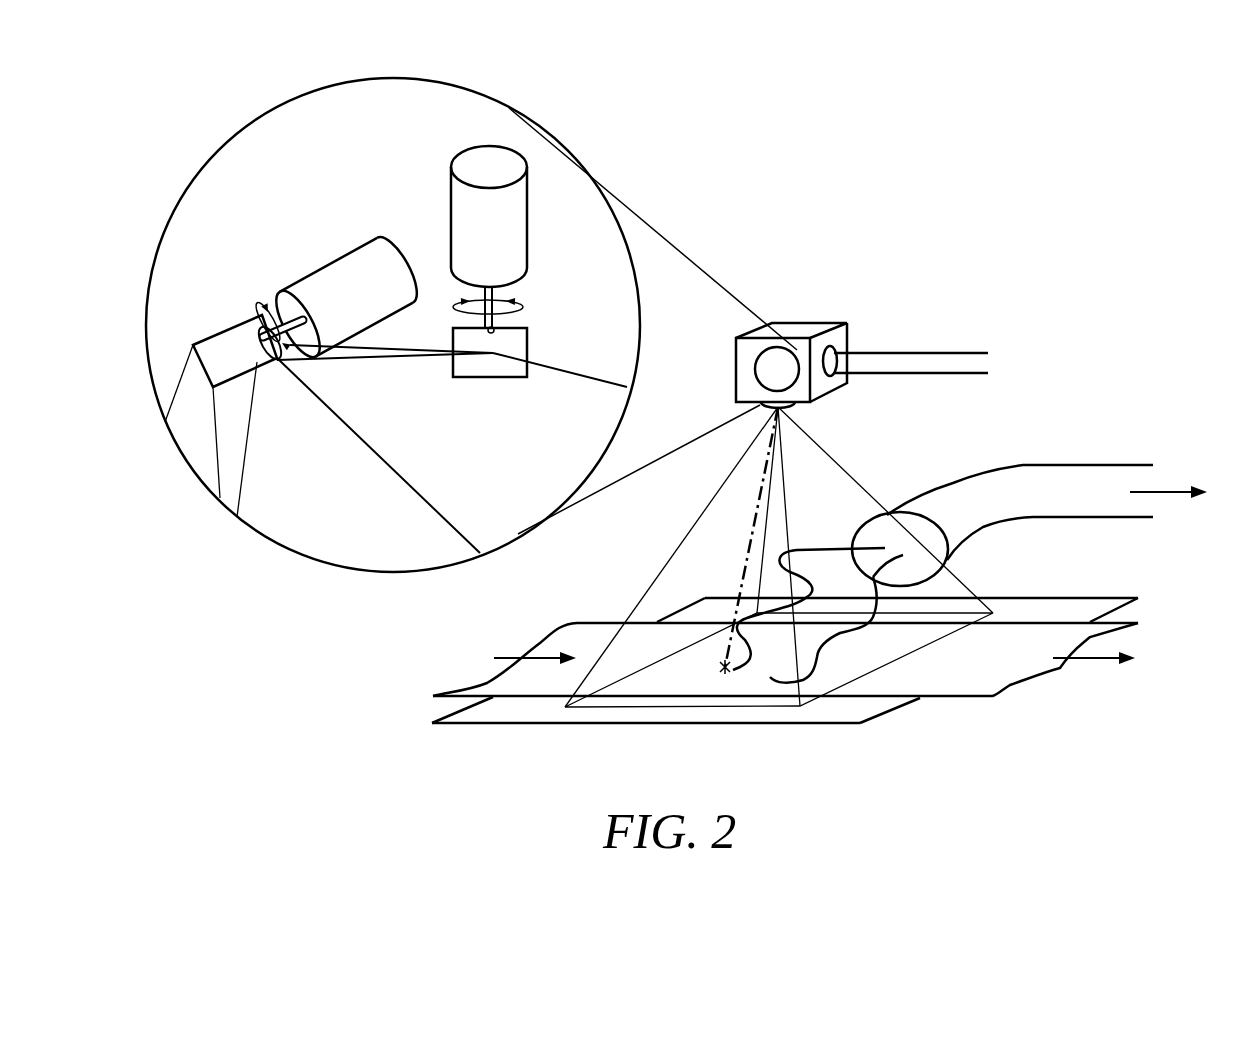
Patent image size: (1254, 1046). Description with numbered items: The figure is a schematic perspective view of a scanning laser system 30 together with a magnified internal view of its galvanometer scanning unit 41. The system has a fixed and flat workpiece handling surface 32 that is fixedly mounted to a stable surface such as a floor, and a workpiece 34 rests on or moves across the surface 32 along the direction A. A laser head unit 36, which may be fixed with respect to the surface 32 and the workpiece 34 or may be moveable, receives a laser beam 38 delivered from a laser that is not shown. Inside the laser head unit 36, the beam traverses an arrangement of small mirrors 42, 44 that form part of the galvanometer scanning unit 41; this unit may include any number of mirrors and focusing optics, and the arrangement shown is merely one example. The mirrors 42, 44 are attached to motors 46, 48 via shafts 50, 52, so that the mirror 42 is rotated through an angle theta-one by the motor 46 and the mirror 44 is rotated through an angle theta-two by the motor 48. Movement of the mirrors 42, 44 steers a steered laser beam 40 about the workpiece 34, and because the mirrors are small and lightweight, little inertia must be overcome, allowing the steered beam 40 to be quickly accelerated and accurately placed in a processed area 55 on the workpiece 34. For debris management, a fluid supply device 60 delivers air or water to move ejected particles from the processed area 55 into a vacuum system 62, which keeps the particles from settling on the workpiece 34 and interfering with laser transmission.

The scanning laser system 30 is at (941, 295).
The workpiece handling surface 32 is at (1063, 597).
The workpiece 34 is at (567, 640).
The laser head unit 36 is at (812, 305).
The laser beam 38 is at (927, 357).
The steered laser beam 40 is at (389, 464).
The galvanometer scanning unit 41 is at (212, 157).
The mirror 42 is at (495, 372).
The mirror 44 is at (232, 374).
The motor 46 is at (456, 198).
The motor 48 is at (327, 277).
The shaft 50 is at (494, 330).
The shaft 52 is at (262, 337).
The processed area 55 is at (860, 662).
The fluid supply device 60 is at (715, 681).
The vacuum system 62 is at (908, 512).